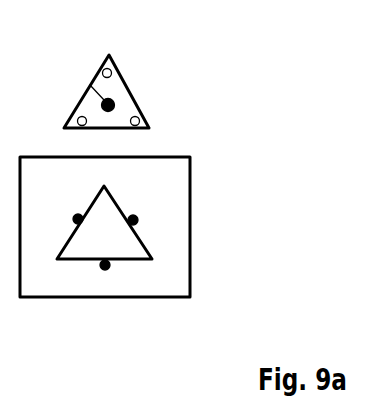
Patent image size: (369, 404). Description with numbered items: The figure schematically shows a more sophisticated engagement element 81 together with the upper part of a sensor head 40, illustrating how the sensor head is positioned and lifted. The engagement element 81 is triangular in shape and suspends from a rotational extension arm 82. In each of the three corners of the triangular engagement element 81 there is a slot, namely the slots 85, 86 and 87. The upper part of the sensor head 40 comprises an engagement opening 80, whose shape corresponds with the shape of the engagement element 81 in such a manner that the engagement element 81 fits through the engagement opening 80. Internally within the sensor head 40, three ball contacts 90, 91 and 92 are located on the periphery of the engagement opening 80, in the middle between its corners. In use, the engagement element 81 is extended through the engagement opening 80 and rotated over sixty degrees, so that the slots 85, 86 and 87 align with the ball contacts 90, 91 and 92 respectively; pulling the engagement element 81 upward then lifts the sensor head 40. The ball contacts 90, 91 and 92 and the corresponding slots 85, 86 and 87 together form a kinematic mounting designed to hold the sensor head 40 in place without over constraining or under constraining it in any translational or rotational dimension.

The sensor head 40 is at (180, 198).
The engagement opening 80 is at (87, 247).
The engagement element 81 is at (128, 90).
The rotational extension arm 82 is at (92, 84).
The slot 85 is at (122, 78).
The slot 86 is at (138, 108).
The slot 87 is at (77, 103).
The ball contact 90 is at (78, 219).
The ball contact 91 is at (133, 220).
The ball contact 92 is at (105, 265).